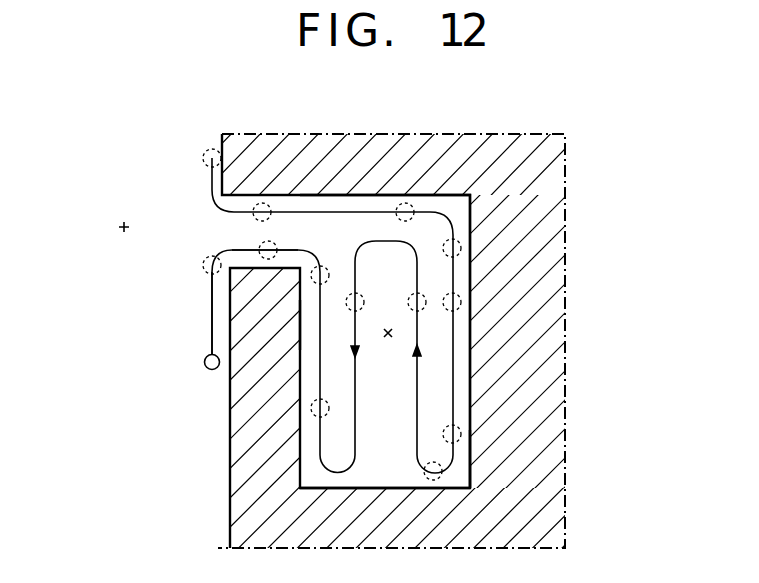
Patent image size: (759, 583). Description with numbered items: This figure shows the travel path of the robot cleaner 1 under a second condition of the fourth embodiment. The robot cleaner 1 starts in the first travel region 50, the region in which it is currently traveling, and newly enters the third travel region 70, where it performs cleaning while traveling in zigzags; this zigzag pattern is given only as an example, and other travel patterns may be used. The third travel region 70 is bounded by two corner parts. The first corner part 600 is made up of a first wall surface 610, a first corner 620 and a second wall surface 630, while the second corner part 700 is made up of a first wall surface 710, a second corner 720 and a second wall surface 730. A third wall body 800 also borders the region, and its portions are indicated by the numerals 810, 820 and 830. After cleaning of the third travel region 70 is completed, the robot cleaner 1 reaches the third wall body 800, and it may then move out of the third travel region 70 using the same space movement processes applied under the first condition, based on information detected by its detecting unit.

The robot cleaner 1 is at (204, 366).
The first travel region 50 is at (122, 226).
The third travel region 70 is at (392, 333).
The first corner part 600 is at (645, 160).
The first wall surface 610 is at (438, 194).
The first corner 620 is at (470, 195).
The second wall surface 630 is at (470, 221).
The second corner part 700 is at (645, 454).
The first wall surface 710 is at (470, 462).
The second corner 720 is at (470, 490).
The second wall surface 730 is at (433, 490).
The third wall body 800 is at (135, 245).
The inner wall portion 810 is at (300, 326).
The tube upper portion 820 is at (262, 266).
The tube vertical portion 830 is at (232, 295).